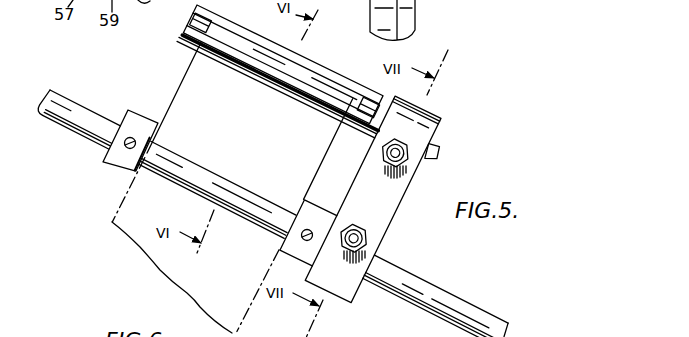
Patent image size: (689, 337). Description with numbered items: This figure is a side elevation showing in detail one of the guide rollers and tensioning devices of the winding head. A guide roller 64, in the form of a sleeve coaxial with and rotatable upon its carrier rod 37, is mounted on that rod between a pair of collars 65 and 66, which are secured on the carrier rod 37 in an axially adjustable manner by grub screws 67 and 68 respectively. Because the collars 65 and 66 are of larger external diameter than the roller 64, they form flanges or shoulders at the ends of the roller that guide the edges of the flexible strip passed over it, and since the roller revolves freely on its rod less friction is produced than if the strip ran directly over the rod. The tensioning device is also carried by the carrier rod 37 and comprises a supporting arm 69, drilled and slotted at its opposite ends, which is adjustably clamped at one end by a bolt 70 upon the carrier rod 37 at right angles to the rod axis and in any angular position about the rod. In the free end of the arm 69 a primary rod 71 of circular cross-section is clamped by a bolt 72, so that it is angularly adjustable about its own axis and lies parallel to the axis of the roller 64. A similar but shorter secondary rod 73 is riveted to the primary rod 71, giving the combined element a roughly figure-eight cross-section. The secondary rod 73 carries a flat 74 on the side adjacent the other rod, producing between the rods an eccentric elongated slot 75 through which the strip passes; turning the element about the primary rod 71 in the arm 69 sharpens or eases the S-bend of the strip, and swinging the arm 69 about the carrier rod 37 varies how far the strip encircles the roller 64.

The carrier rod 37 is at (402, 282).
The guide roller 64 is at (183, 157).
The collar 65 is at (130, 127).
The collar 66 is at (322, 217).
The grub screw 67 is at (126, 150).
The grub screw 68 is at (312, 240).
The supporting arm 69 is at (390, 190).
The bolt 70 is at (362, 238).
The primary rod 71 is at (251, 66).
The bolt 72 is at (408, 148).
The secondary rod 73 is at (313, 65).
The flat 74 is at (230, 40).
The eccentric elongated slot 75 is at (332, 90).